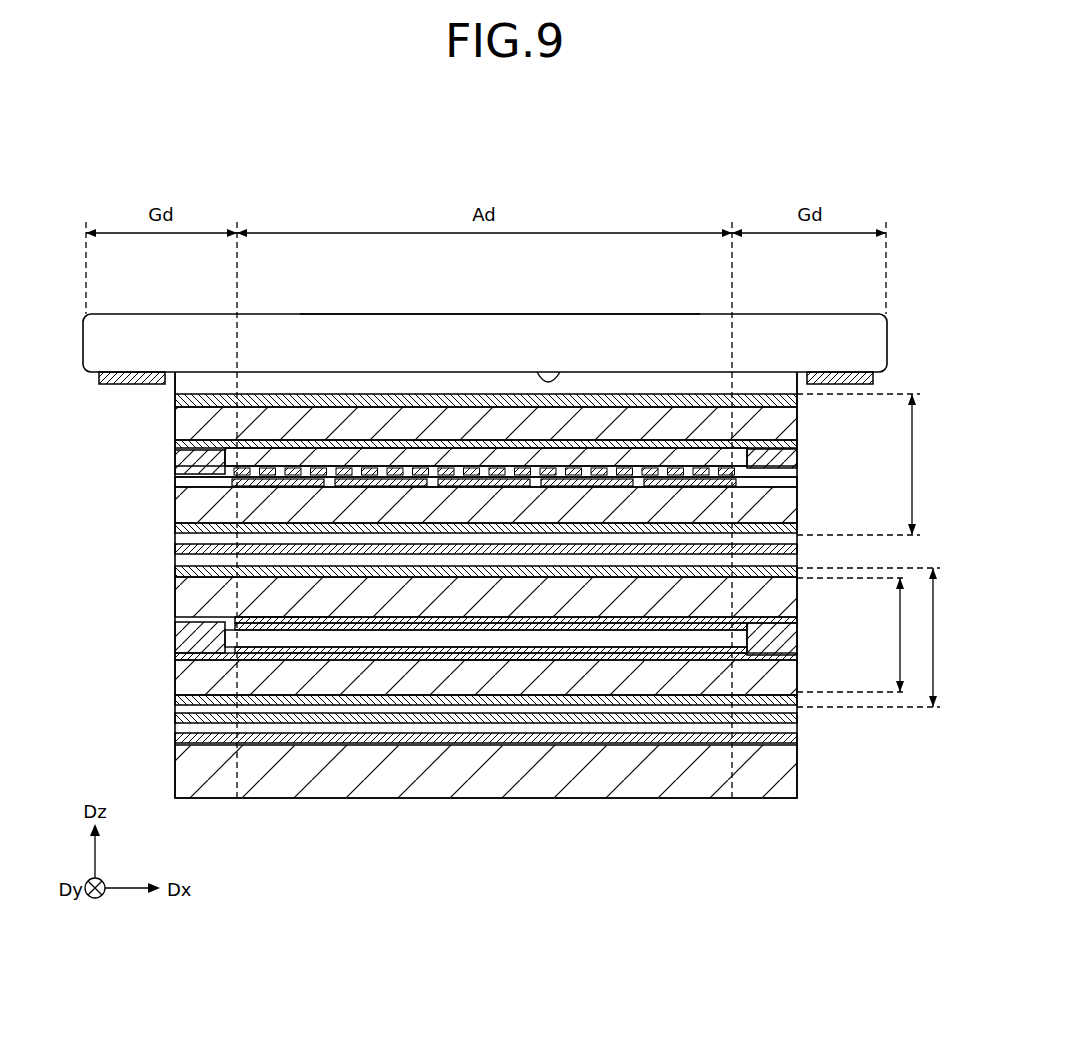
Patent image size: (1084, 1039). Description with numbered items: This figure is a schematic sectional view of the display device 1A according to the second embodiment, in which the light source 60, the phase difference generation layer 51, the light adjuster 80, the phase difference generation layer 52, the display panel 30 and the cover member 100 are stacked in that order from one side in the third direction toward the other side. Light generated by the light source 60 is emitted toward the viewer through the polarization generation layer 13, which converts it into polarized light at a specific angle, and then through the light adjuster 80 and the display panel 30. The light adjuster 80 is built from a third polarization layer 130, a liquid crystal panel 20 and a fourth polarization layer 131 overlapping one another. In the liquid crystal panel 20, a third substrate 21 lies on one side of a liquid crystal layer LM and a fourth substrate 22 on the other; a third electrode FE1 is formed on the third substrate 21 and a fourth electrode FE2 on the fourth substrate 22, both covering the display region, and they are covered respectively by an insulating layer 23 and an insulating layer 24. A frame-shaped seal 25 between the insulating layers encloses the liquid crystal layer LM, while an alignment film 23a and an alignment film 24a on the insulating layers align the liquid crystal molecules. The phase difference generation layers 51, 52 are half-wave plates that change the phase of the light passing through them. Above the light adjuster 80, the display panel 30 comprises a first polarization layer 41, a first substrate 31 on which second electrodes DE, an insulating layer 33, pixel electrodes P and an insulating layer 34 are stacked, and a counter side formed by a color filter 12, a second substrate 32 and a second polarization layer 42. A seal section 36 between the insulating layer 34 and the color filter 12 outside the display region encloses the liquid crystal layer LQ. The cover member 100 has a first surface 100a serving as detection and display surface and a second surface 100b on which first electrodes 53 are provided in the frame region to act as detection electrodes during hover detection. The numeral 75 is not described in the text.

The display device 1A is at (733, 169).
The cover member 100 is at (887, 338).
The first surface 100a is at (645, 314).
The second surface 100b is at (561, 372).
The adhesive layer 75 is at (484, 384).
The first electrode 53 is at (99, 379).
The second polarization layer 42 is at (175, 400).
The second substrate 32 is at (797, 418).
The color filter 12 is at (797, 445).
The liquid crystal layer LQ is at (258, 455).
The pixel electrode P is at (250, 458).
The seal section 36 is at (797, 459).
The insulating layer 34 is at (340, 468).
The insulating layer 33 is at (797, 483).
The second electrode DE is at (258, 483).
The first substrate 31 is at (797, 512).
The first polarization layer 41 is at (175, 528).
The phase difference generation layer 52 is at (797, 550).
The fourth polarization layer 131 is at (175, 571).
The fourth substrate 22 is at (797, 598).
The insulating layer 24 is at (797, 621).
The alignment film 23a is at (332, 617).
The fourth electrode FE2 is at (252, 621).
The seal 25 is at (797, 638).
The liquid crystal layer LM is at (300, 633).
The third electrode FE1 is at (252, 650).
The insulating layer 23 is at (797, 657).
The alignment film 24a is at (458, 630).
The third substrate 21 is at (797, 676).
The third polarization layer 130 is at (175, 700).
The phase difference generation layer 51 is at (797, 718).
The polarization generation layer 13 is at (175, 738).
The light source 60 is at (797, 770).
The display panel 30 is at (868, 464).
The liquid crystal panel 20 is at (862, 635).
The light adjuster 80 is at (879, 637).